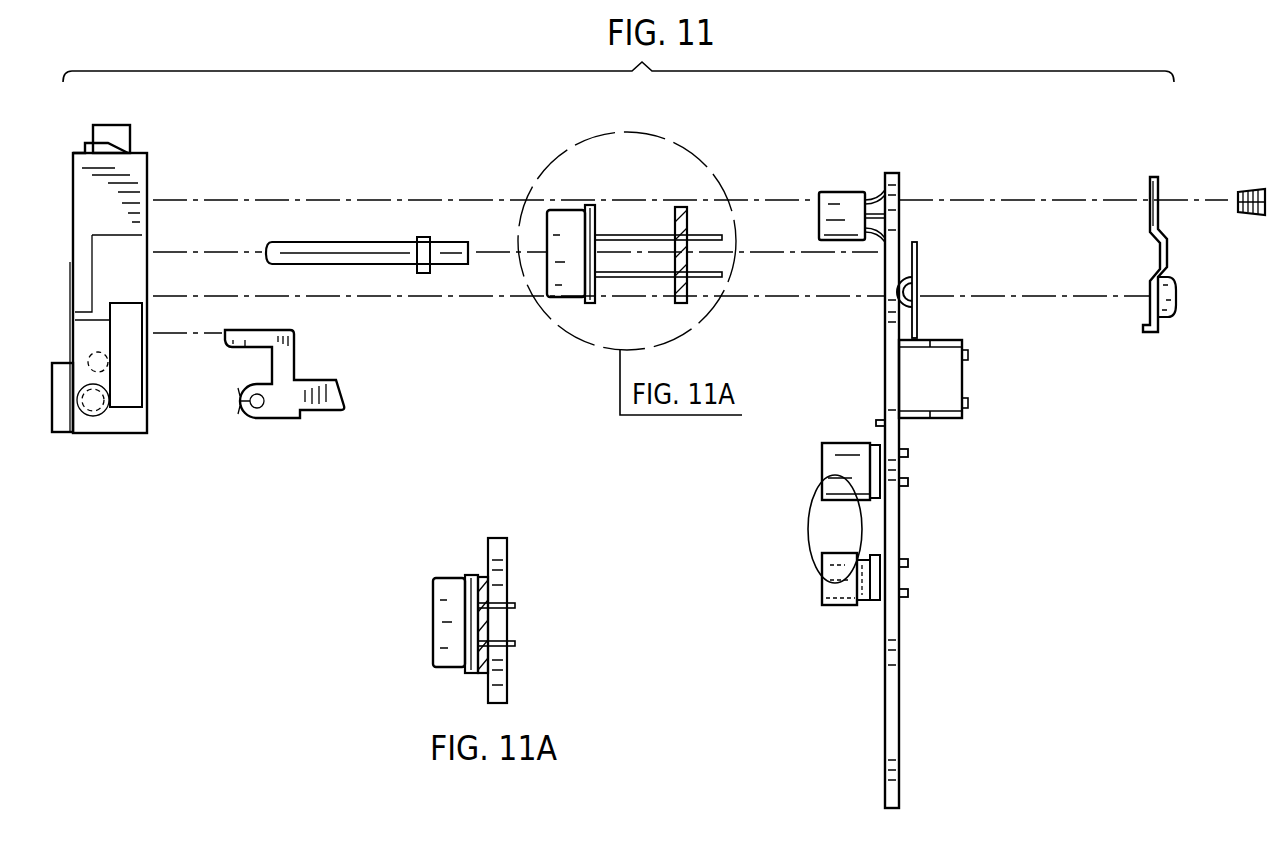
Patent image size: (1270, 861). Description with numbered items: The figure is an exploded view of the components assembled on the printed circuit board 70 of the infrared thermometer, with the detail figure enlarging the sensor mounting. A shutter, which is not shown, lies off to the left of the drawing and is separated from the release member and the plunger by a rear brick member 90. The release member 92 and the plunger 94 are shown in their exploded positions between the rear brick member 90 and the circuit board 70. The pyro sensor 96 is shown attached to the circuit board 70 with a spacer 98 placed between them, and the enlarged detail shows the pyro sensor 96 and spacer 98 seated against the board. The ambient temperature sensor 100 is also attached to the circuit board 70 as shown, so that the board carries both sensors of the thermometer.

In FIG. 11, the printed circuit board 70 is at (899, 624).
In FIG. 11, the rear brick member 90 is at (133, 138).
In FIG. 11, the release member 92 is at (240, 328).
In FIG. 11, the plunger 94 is at (372, 242).
In FIG. 11, the pyro sensor 96 is at (573, 210).
In FIG. 11A, the pyro sensor 96 is at (447, 578).
In FIG. 11, the spacer 98 is at (678, 207).
In FIG. 11A, the spacer 98 is at (483, 577).
In FIG. 11, the ambient temperature sensor 100 is at (850, 192).